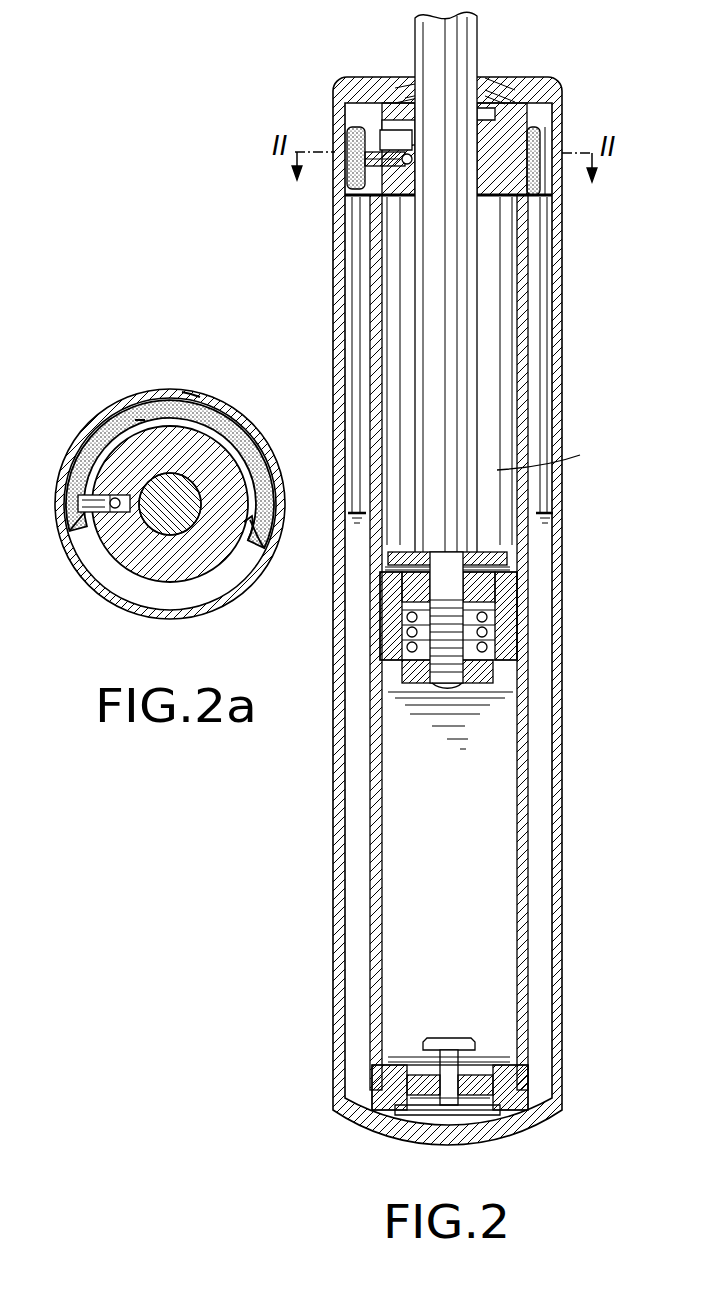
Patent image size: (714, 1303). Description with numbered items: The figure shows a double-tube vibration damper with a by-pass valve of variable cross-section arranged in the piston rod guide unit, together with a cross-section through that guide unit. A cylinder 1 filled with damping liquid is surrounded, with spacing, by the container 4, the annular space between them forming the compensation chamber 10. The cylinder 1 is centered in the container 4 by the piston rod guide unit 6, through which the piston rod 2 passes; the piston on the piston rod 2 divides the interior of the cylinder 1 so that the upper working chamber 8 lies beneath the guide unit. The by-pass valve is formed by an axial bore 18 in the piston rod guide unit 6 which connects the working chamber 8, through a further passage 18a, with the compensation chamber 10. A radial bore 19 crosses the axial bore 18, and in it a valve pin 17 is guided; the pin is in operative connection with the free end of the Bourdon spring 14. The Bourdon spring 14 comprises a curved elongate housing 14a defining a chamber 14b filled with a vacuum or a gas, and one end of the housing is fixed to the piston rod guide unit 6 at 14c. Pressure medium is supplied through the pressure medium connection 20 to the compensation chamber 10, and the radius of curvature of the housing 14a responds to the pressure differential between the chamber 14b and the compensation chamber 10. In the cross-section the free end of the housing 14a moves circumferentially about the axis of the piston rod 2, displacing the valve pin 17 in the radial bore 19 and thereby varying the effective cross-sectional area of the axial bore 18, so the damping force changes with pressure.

In FIG. 2, the cylinder 1 is at (563, 373).
In FIG. 2, the piston rod 2 is at (463, 393).
In FIG. 2a, the piston rod 2 is at (155, 522).
In FIG. 2, the container 4 is at (563, 318).
In FIG. 2a, the container 4 is at (273, 534).
In FIG. 2, the piston rod guide unit 6 is at (562, 203).
In FIG. 2a, the piston rod guide unit 6 is at (205, 568).
In FIG. 2, the working chamber 8 is at (547, 453).
In FIG. 2, the compensation chamber 10 is at (540, 730).
In FIG. 2a, the compensation chamber 10 is at (103, 570).
In FIG. 2, the Bourdon spring 14 is at (535, 180).
In FIG. 2a, the Bourdon spring 14 is at (225, 424).
In FIG. 2a, the curved elongate housing 14a is at (188, 395).
In FIG. 2a, the chamber 14b is at (140, 420).
In FIG. 2a, the fixing point 14c is at (248, 533).
In FIG. 2, the valve pin 17 is at (360, 160).
In FIG. 2a, the valve pin 17 is at (84, 503).
In FIG. 2, the axial bore 18 is at (387, 190).
In FIG. 2a, the axial bore 18 is at (110, 497).
In FIG. 2, the further passage 18a is at (395, 148).
In FIG. 2, the radial bore 19 is at (402, 157).
In FIG. 2a, the radial bore 19 is at (115, 498).
In FIG. 2, the pressure medium connection 20 is at (562, 130).